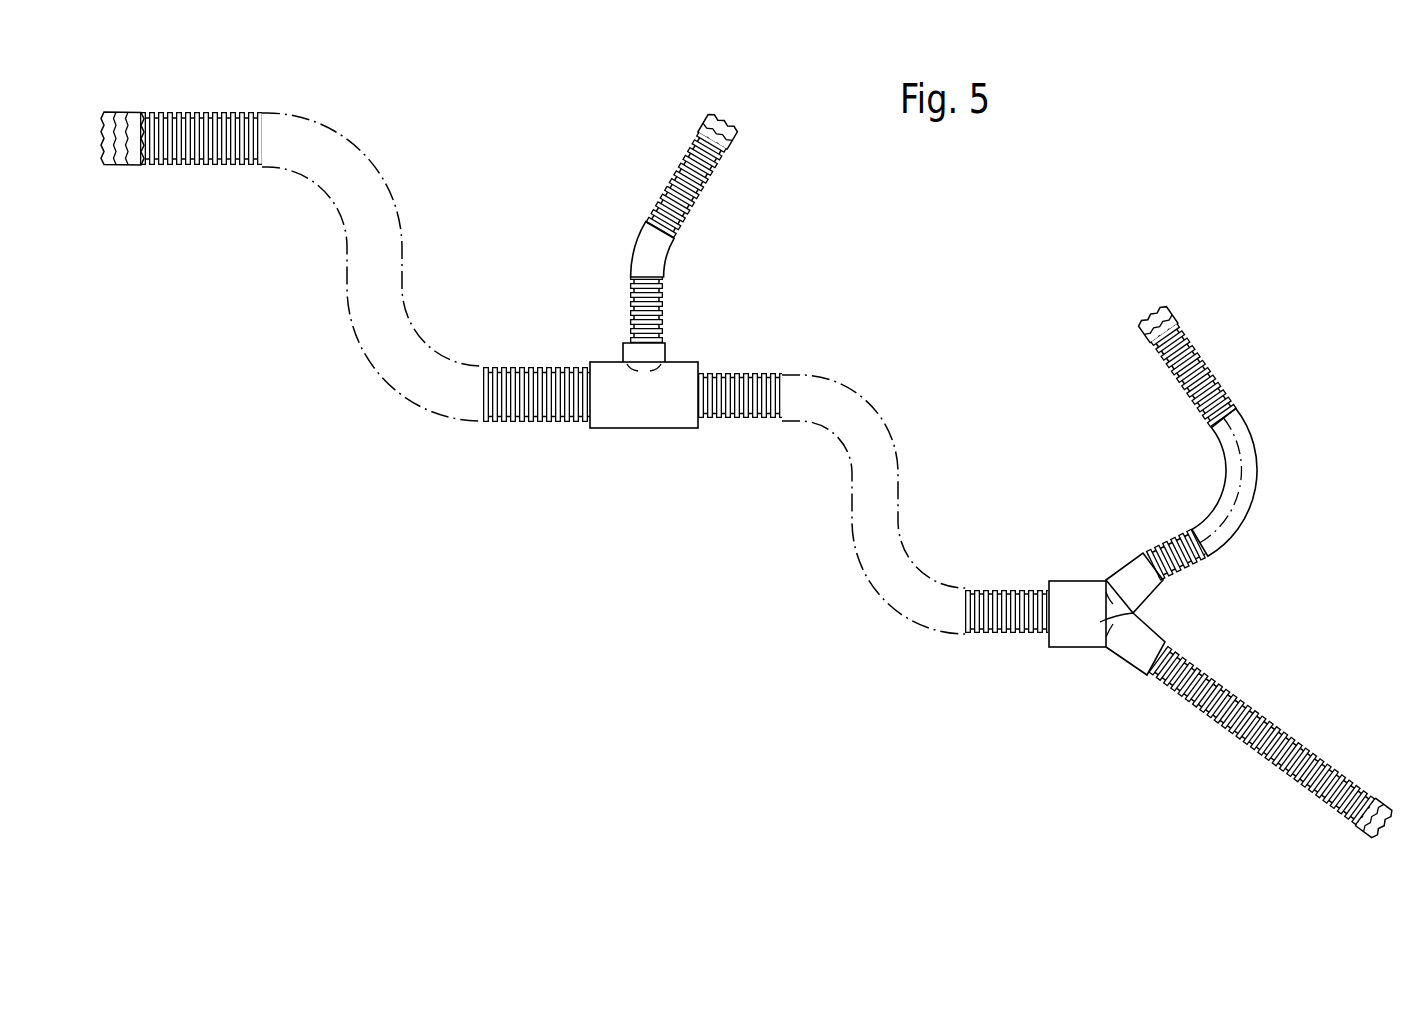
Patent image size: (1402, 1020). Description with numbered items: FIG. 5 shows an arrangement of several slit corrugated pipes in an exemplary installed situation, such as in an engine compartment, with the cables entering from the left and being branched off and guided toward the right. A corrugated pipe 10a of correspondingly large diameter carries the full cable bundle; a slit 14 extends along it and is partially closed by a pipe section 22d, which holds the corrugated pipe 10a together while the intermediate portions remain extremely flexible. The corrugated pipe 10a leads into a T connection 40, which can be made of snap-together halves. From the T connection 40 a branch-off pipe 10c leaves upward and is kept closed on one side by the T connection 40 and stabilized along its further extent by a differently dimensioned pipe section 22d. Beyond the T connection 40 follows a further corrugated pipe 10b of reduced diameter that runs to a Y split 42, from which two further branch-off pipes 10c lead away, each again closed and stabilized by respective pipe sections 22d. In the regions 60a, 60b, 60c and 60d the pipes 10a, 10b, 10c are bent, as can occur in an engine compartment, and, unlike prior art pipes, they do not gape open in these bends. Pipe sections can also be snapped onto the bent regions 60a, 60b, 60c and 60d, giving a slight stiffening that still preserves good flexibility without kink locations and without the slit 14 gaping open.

The corrugated pipe 10a is at (528, 423).
The corrugated pipe 10b is at (1005, 640).
The branch-off pipe 10c is at (672, 170).
The slit 14 is at (176, 166).
The pipe section 22d is at (120, 108).
The T connection 40 is at (646, 410).
The Y split 42 is at (1133, 613).
The bent region 60a is at (343, 283).
The bent region 60b is at (640, 253).
The bent region 60c is at (868, 585).
The bent region 60d is at (1240, 430).